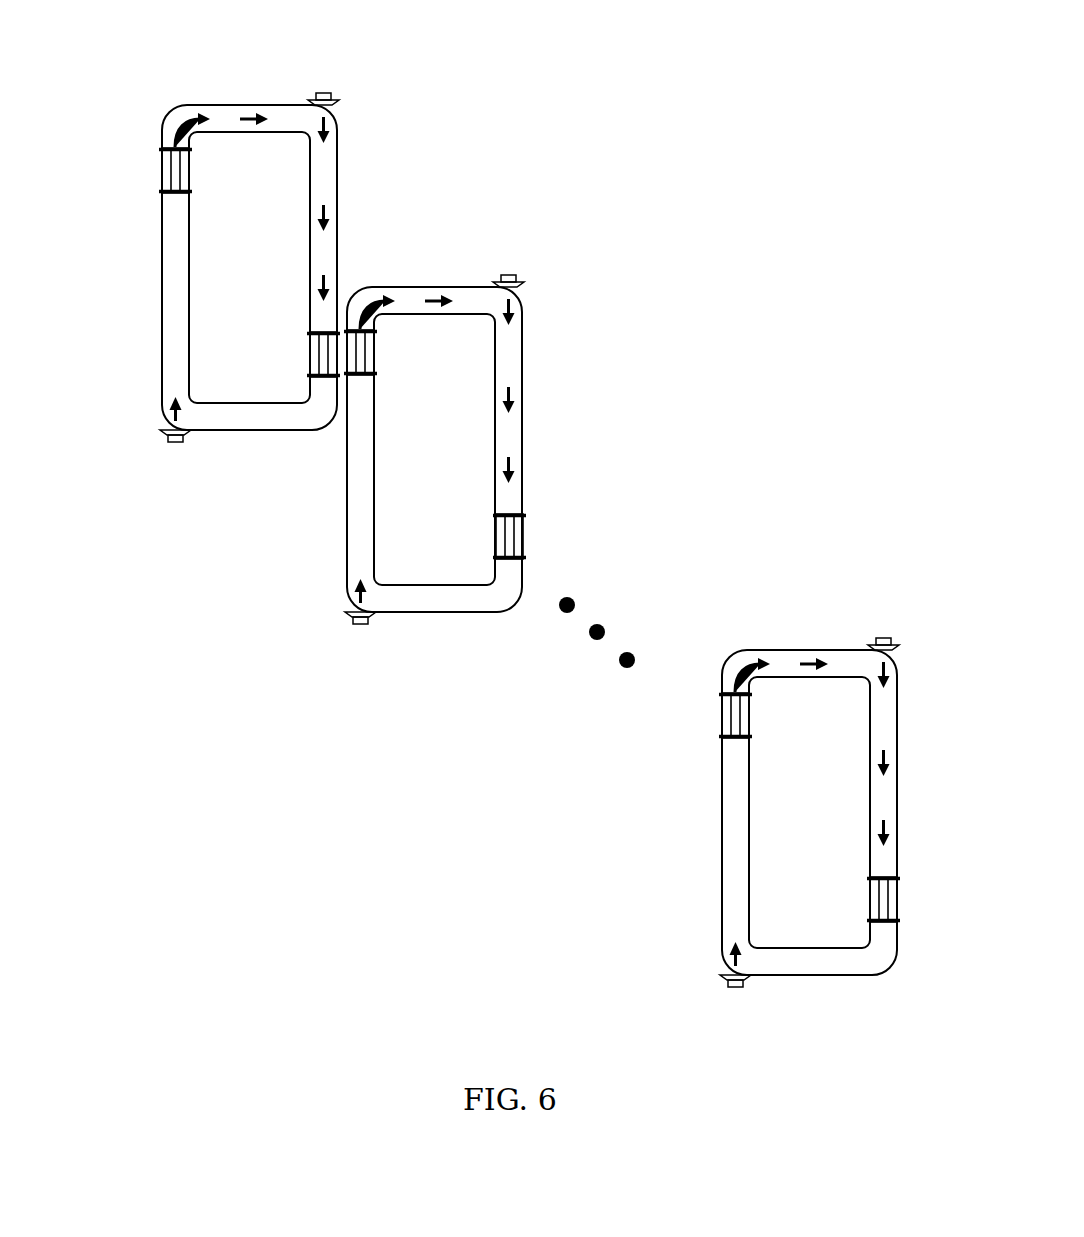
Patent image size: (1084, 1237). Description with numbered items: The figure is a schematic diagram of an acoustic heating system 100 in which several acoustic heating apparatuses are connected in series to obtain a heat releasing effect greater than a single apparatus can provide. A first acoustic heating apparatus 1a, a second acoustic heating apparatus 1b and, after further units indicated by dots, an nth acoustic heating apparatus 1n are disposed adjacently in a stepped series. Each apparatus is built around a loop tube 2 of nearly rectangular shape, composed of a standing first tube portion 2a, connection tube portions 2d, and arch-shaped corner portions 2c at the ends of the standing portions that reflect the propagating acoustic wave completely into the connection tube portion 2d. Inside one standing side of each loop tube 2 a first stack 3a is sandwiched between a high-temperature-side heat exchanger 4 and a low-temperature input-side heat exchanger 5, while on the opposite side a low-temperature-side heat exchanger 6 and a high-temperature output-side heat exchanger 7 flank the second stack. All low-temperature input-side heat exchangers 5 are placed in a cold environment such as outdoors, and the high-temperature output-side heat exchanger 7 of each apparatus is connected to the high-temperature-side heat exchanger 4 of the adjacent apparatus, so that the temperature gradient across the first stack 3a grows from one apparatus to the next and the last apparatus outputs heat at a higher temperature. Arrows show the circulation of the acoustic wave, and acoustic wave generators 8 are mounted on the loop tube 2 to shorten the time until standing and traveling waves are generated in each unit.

The acoustic heating system 100 is at (701, 188).
The first acoustic heating apparatus 1a is at (288, 72).
The second acoustic heating apparatus 1b is at (473, 250).
The nth acoustic heating apparatus 1n is at (849, 583).
The loop tube 2 is at (270, 138).
The first tube portion 2a is at (162, 270).
The corner portion 2c is at (180, 108).
The connection tube portion 2d is at (242, 105).
The first stack 3a is at (168, 172).
The high-temperature-side heat exchanger 4 is at (165, 194).
The low-temperature input-side heat exchanger 5 is at (162, 149).
The low-temperature-side heat exchanger 6 is at (310, 383).
The high-temperature output-side heat exchanger 7 is at (312, 333).
The acoustic wave generator 8 is at (330, 92).